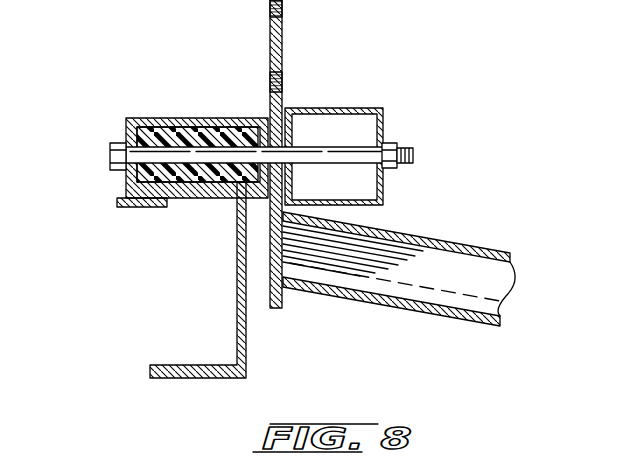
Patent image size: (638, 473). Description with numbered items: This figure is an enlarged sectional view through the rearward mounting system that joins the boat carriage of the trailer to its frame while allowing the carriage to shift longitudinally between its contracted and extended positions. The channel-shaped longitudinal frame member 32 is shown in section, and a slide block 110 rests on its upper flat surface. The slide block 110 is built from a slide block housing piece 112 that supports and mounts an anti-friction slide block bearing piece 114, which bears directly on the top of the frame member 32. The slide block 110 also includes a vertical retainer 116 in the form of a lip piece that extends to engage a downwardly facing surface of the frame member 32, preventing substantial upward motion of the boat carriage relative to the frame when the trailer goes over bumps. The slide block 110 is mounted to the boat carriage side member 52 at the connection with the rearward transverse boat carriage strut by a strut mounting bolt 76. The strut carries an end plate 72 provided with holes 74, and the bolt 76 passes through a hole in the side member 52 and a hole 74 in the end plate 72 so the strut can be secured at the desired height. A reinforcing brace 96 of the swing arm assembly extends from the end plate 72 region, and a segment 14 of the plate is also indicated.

The deck plate segment 14 is at (282, 12).
The longitudinal frame member 32 is at (190, 374).
The boat carriage side member 52 is at (383, 108).
The end plate 72 is at (282, 47).
The hole 74 is at (282, 84).
The bolt 76 is at (424, 153).
The reinforcing brace 96 is at (435, 246).
The slide block 110 is at (118, 95).
The slide block housing piece 112 is at (199, 122).
The slide block bearing piece 114 is at (151, 135).
The vertical retainer 116 is at (130, 205).